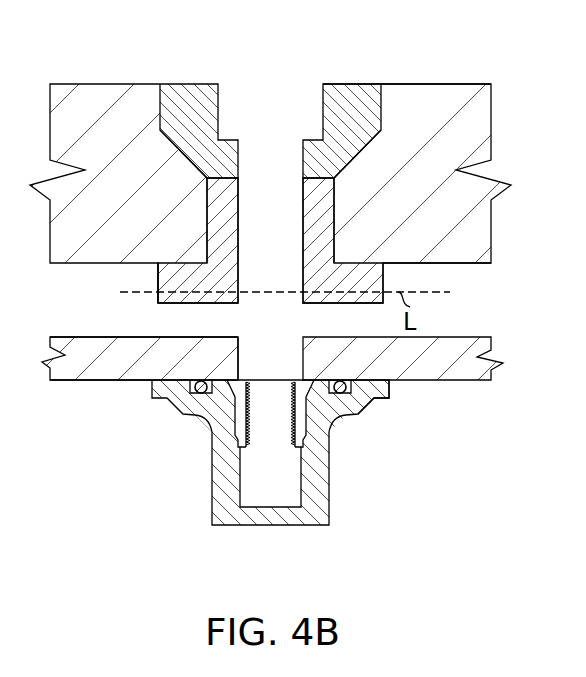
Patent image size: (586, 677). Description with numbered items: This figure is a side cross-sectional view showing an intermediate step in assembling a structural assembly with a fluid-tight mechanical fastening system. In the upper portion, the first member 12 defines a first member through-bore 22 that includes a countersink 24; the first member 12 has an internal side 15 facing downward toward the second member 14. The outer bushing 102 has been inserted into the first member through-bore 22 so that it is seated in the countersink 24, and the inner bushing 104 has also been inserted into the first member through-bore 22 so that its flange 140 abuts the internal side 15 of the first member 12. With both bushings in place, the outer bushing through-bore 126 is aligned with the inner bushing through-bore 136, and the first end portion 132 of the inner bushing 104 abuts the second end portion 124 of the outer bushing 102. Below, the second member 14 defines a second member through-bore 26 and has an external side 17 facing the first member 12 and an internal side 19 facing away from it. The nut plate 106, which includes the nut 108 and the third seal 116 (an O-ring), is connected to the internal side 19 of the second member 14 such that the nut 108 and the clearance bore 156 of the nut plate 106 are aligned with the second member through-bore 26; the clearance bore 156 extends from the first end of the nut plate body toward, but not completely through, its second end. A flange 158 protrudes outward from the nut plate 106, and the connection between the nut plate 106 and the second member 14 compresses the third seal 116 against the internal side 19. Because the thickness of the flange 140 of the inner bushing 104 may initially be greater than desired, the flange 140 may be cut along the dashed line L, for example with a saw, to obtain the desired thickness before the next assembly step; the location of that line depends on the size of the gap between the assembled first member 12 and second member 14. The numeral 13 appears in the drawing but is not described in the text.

The first member 12 is at (507, 190).
The top surface of housing 13 is at (462, 85).
The second member 14 is at (503, 363).
The internal side of the first member 15 is at (477, 265).
The external side of the second member 17 is at (60, 337).
The internal side of the second member 19 is at (80, 381).
The first member through-bore 22 is at (208, 203).
The countersink 24 is at (193, 160).
The second member through-bore 26 is at (243, 340).
The outer bushing 102 is at (352, 92).
The inner bushing 104 is at (336, 230).
The nut plate 106 is at (330, 482).
The nut 108 is at (287, 434).
The third seal 116 is at (200, 391).
The second end portion of the outer bushing 124 is at (369, 154).
The outer bushing through-bore 126 is at (238, 152).
The first end portion of the inner bushing 132 is at (344, 207).
The inner bushing through-bore 136 is at (240, 195).
The flange 140 is at (158, 268).
The clearance bore 156 is at (243, 481).
The flange of the nut plate 158 is at (389, 389).